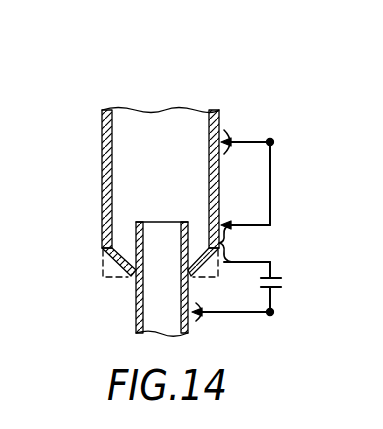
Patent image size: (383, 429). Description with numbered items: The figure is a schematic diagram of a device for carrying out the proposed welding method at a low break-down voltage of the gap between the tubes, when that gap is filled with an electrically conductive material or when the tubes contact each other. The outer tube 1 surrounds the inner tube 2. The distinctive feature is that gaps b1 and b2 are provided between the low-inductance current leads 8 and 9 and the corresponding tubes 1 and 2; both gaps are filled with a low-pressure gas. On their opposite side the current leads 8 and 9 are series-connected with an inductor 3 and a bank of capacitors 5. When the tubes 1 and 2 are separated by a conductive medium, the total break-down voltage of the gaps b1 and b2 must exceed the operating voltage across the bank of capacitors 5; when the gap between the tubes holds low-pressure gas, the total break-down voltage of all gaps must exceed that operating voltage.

The tube 1 is at (102, 172).
The tube 2 is at (136, 297).
The inductor 3 is at (235, 243).
The bank of capacitors 5 is at (261, 289).
The low-inductance current lead 8 is at (259, 148).
The low-inductance current lead 9 is at (238, 310).
The gap b1 is at (242, 133).
The gap b2 is at (213, 327).